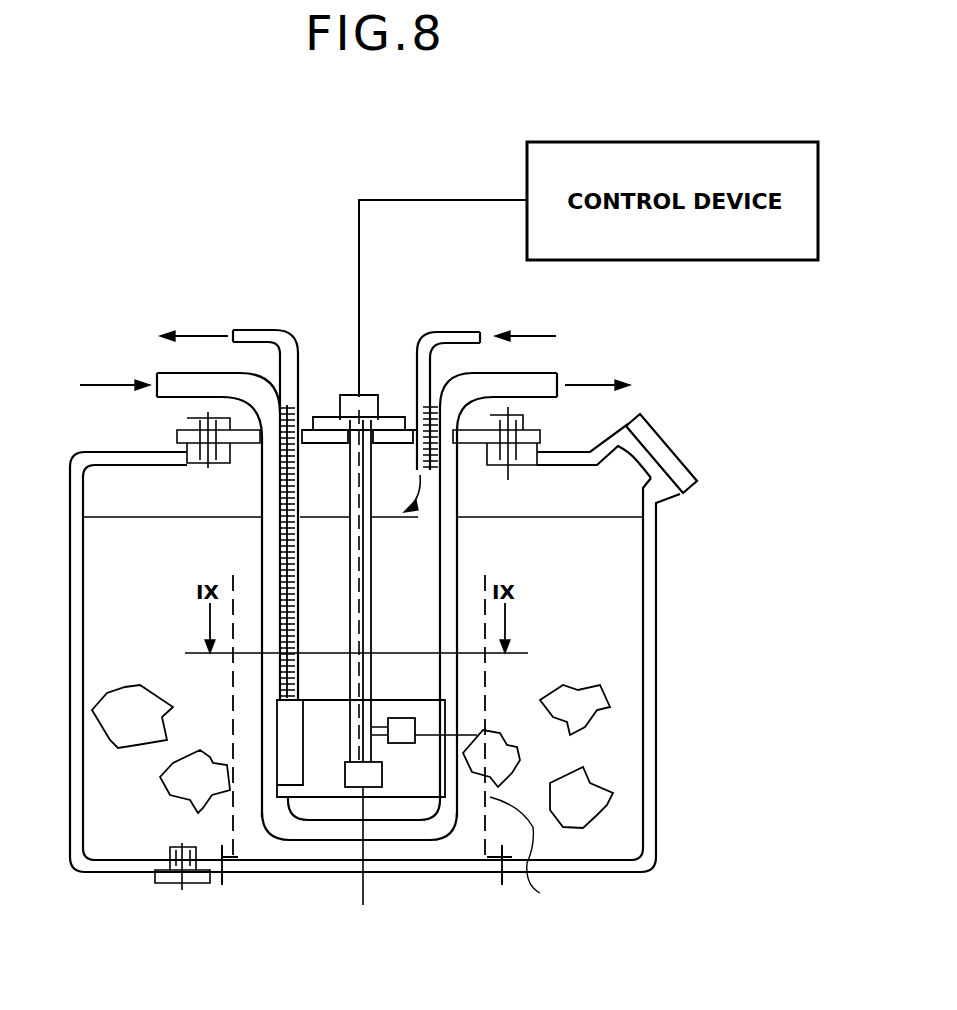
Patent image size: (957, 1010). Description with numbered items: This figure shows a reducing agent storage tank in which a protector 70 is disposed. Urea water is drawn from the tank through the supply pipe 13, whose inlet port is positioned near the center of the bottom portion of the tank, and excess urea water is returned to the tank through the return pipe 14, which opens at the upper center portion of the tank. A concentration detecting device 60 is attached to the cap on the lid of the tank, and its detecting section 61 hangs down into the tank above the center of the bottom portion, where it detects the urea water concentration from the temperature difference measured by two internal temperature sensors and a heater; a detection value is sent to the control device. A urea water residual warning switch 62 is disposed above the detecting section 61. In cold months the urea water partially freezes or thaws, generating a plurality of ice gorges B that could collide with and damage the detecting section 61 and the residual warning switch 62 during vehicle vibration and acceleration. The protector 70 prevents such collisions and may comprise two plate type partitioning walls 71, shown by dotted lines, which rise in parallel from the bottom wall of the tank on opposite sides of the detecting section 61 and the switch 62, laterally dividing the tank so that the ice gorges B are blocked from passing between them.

The supply pipe 13 is at (250, 330).
The return pipe 14 is at (467, 332).
The concentration detecting device 60 is at (365, 568).
The detecting section 61 is at (343, 777).
The urea water residual warning switch 62 is at (477, 730).
The protector 70 is at (393, 785).
The plate type partitioning walls 71 is at (535, 852).
The ice gorges B is at (603, 710).